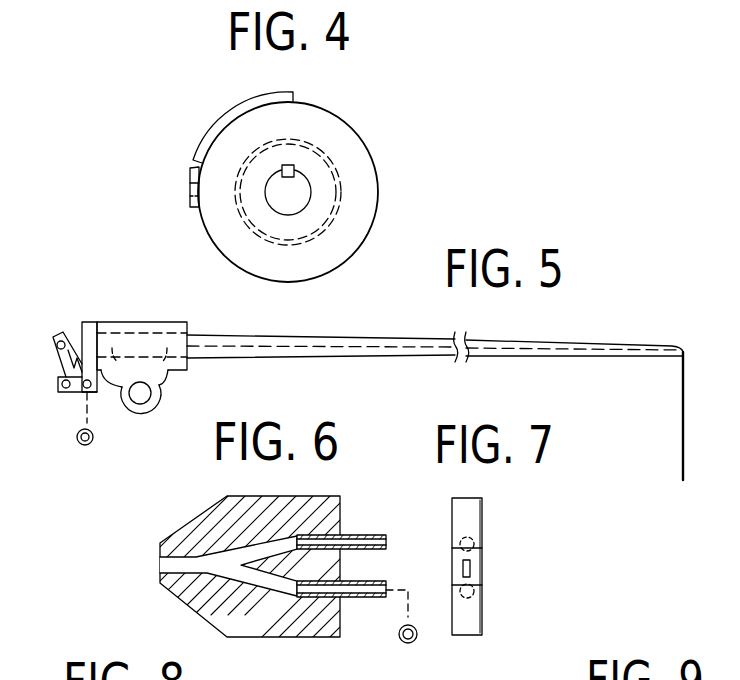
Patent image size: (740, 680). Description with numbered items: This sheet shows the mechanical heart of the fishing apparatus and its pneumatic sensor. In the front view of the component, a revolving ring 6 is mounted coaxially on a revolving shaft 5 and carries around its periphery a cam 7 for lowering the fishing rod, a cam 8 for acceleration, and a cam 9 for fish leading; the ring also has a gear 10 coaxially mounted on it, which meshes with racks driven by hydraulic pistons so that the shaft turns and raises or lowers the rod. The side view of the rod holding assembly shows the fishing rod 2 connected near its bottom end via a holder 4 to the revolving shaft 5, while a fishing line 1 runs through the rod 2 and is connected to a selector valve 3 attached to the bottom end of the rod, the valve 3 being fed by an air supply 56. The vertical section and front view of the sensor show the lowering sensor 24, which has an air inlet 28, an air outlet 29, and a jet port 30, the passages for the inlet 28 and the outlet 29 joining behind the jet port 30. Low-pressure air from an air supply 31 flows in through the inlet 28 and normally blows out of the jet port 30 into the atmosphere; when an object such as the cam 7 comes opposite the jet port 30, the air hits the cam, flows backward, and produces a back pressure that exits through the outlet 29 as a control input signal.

In FIG. 5, the fishing line 1 is at (681, 418).
In FIG. 5, the fishing rod 2 is at (343, 337).
In FIG. 5, the selector valve 3 is at (78, 337).
In FIG. 5, the holder 4 is at (113, 328).
In FIG. 4, the revolving shaft 5 is at (298, 182).
In FIG. 5, the revolving shaft 5 is at (140, 395).
In FIG. 4, the revolving ring 6 is at (371, 212).
In FIG. 4, the cam for lowering the fishing rod 7 is at (189, 172).
In FIG. 4, the cam for acceleration 8 is at (209, 137).
In FIG. 4, the cam for fish leading 9 is at (190, 204).
In FIG. 4, the gear 10 is at (340, 176).
In FIG. 6, the lowering sensor 24 is at (181, 521).
In FIG. 7, the lowering sensor 24 is at (489, 519).
In FIG. 6, the air inlet 28 is at (363, 597).
In FIG. 7, the air inlet 28 is at (473, 593).
In FIG. 6, the air outlet 29 is at (353, 535).
In FIG. 7, the air outlet 29 is at (475, 542).
In FIG. 6, the jet port 30 is at (173, 567).
In FIG. 7, the jet port 30 is at (472, 567).
In FIG. 6, the air supply 31 is at (401, 642).
In FIG. 5, the air supply for the valve 56 is at (78, 440).